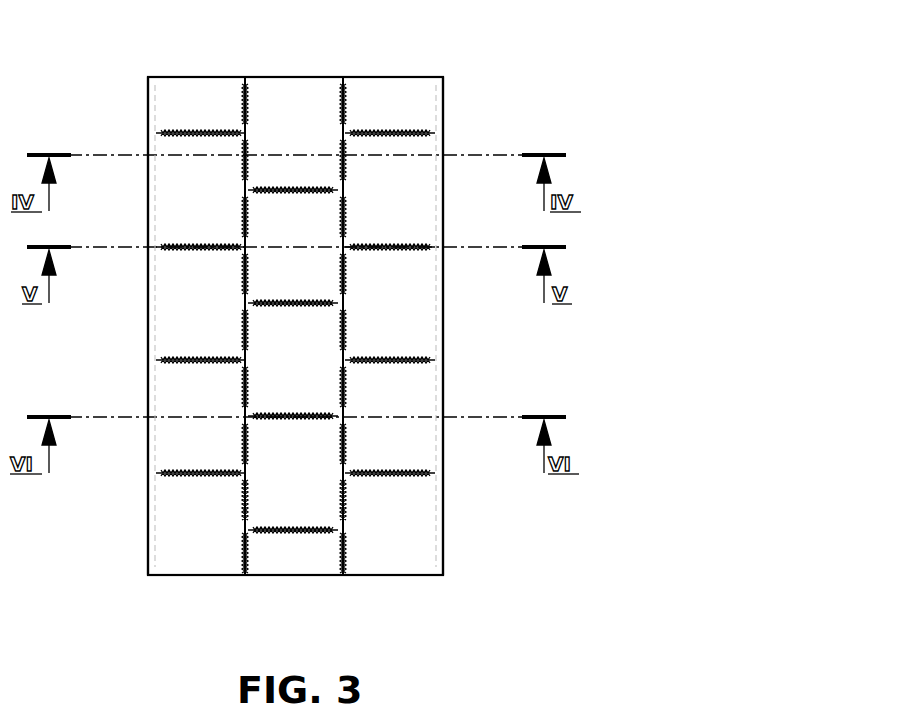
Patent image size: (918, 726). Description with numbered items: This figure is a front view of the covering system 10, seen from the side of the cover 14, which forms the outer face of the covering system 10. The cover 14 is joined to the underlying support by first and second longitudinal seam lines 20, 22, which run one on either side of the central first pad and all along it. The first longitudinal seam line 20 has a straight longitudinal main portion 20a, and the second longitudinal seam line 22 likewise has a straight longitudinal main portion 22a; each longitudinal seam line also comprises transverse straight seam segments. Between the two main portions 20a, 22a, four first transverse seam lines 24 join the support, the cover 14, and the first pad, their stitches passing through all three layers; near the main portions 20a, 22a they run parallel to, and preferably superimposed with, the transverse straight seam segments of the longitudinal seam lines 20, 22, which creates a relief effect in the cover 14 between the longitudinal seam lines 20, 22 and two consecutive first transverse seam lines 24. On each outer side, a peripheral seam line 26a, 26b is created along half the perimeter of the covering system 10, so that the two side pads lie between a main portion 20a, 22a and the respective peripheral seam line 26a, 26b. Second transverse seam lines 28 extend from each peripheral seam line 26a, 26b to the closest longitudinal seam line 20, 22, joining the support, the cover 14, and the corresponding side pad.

The covering system 10 is at (532, 112).
The cover 14 is at (182, 97).
The first longitudinal seam line 20 is at (236, 211).
The longitudinal main portion 20a is at (243, 319).
The second longitudinal seam line 22 is at (352, 211).
The longitudinal main portion 22a is at (347, 319).
The first transverse seam lines 24 is at (325, 301).
The peripheral seam line 26a is at (146, 103).
The peripheral seam line 26b is at (444, 103).
The second transverse seam lines 28 is at (220, 129).